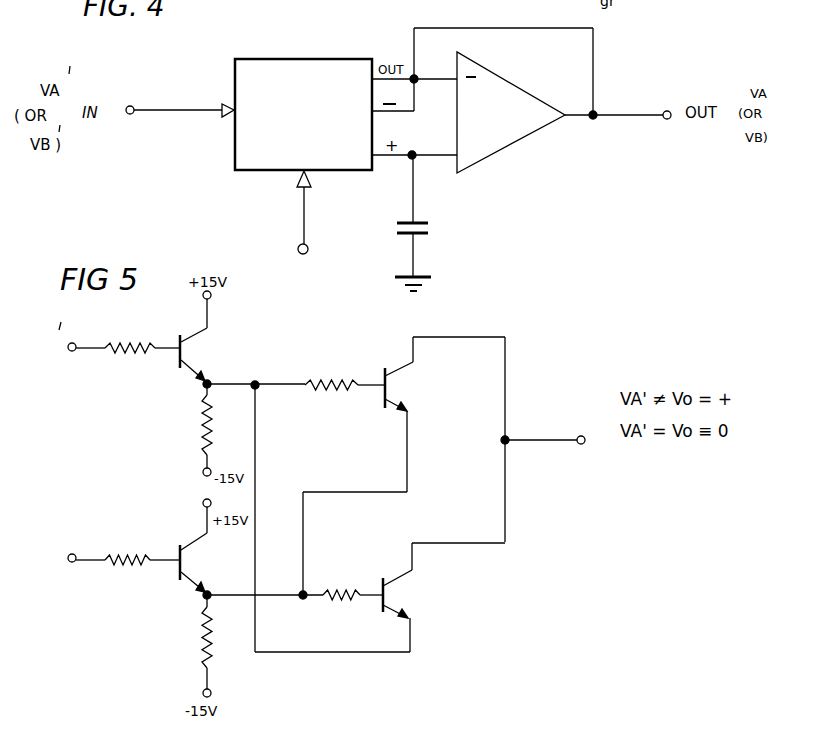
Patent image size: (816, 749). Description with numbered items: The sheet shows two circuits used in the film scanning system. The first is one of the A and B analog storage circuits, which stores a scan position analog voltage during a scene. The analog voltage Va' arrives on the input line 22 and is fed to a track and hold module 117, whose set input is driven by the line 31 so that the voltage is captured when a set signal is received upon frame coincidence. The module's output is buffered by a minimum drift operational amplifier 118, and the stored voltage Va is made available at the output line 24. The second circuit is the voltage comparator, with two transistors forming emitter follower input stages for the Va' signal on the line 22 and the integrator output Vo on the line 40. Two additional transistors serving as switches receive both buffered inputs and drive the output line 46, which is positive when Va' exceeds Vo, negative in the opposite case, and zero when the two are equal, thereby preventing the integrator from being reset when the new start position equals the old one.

In FIG. 4, the line 22 is at (178, 110).
In FIG. 5, the line 22 is at (88, 352).
In FIG. 4, the track and hold module 117 is at (288, 70).
In FIG. 4, the line 31 is at (304, 213).
In FIG. 4, the minimum drift operational amplifier 118 is at (522, 92).
In FIG. 4, the output line 24 is at (633, 113).
In FIG. 5, the line 40 is at (87, 557).
In FIG. 5, the output line 46 is at (532, 443).